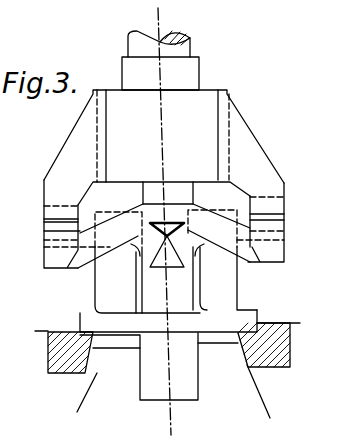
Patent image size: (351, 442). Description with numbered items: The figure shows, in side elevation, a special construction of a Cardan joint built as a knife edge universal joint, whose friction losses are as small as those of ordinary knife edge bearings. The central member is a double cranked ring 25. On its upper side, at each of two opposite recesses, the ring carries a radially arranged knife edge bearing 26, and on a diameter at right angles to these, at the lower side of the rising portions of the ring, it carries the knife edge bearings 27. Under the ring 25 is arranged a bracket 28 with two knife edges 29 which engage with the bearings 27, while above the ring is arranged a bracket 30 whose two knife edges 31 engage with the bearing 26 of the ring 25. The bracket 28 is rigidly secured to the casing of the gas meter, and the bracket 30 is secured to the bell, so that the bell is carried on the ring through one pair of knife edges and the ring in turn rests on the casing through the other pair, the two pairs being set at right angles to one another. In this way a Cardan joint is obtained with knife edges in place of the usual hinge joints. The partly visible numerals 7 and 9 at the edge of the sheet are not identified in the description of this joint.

The double cranked ring 25 is at (217, 225).
The knife edge bearing 26 is at (53, 228).
The knife edge bearing 27 is at (167, 231).
The bracket 28 is at (143, 291).
The knife edge 29 is at (168, 238).
The bracket 30 is at (205, 100).
The knife edge 31 is at (53, 215).
The partial numeral 7 is at (3, 228).
The partial numeral 9 is at (5, 268).